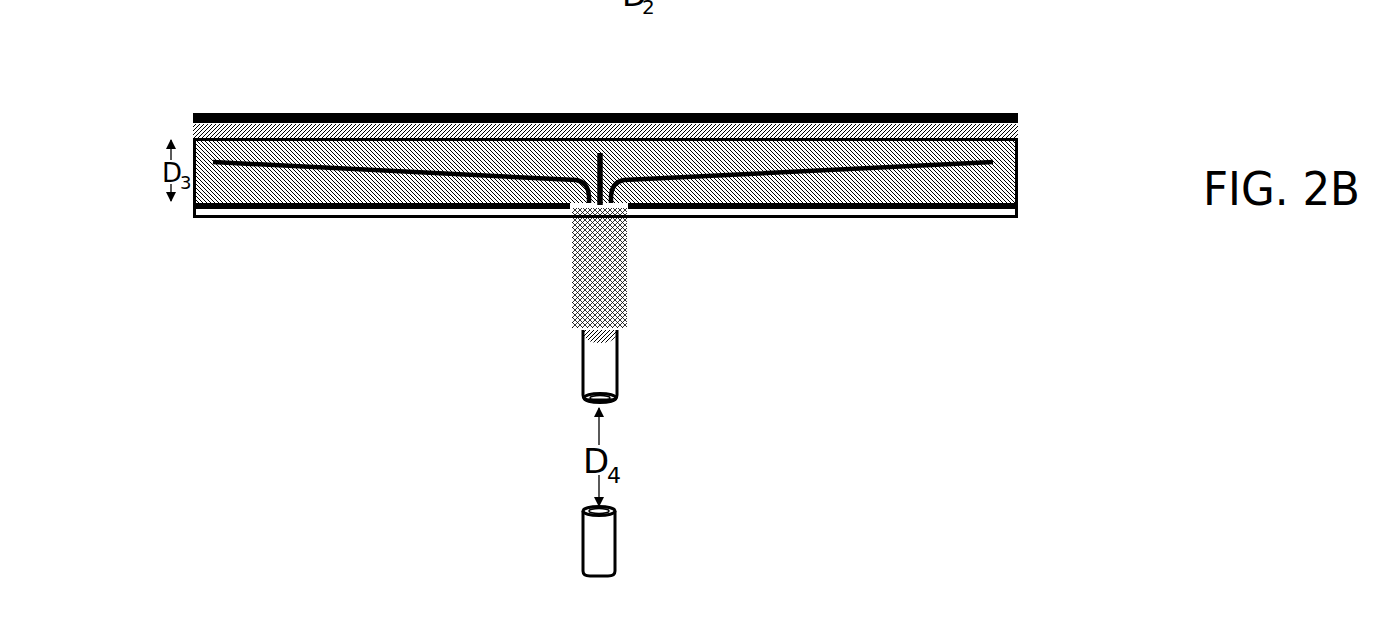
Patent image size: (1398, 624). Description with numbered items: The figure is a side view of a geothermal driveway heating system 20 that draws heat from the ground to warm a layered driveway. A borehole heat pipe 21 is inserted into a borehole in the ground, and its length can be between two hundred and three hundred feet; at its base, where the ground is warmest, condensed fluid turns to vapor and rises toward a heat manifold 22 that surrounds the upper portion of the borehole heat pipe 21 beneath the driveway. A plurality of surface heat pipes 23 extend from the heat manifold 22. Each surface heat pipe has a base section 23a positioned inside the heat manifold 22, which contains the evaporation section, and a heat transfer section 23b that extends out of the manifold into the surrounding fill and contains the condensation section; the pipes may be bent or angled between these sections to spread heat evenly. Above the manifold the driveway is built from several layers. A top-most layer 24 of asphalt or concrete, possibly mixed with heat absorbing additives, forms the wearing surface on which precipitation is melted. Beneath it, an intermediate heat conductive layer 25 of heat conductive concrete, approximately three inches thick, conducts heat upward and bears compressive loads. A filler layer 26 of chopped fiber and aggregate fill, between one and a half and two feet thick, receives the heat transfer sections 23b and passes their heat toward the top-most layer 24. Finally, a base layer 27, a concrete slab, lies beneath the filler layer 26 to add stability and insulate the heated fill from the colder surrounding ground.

The geothermal driveway heating system 20 is at (369, 262).
The borehole heat pipe 21 is at (617, 380).
The heat manifold 22 is at (620, 300).
The surface heat pipes 23 is at (693, 170).
The base section 23a is at (627, 218).
The heat transfer section 23b is at (807, 164).
The top-most layer 24 is at (988, 110).
The intermediate heat conductive layer 25 is at (1019, 133).
The filler layer 26 is at (1020, 175).
The base layer 27 is at (1020, 210).